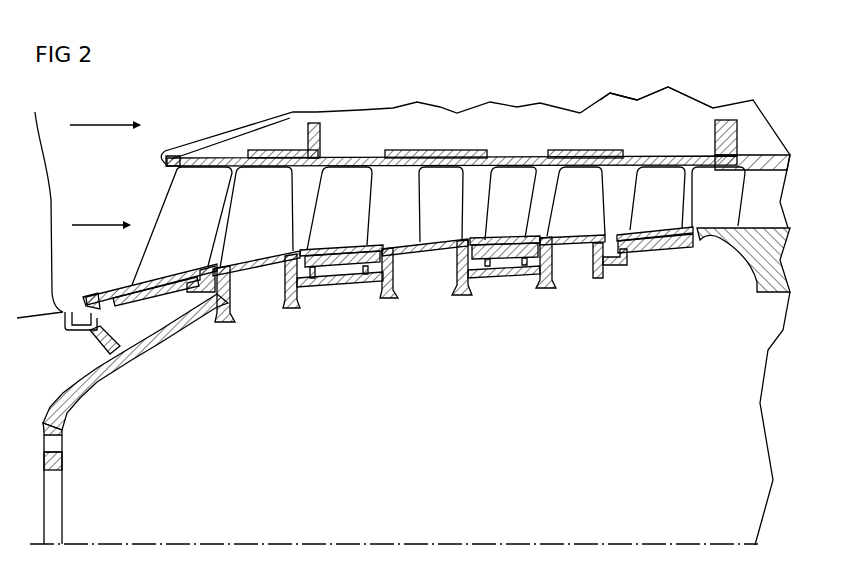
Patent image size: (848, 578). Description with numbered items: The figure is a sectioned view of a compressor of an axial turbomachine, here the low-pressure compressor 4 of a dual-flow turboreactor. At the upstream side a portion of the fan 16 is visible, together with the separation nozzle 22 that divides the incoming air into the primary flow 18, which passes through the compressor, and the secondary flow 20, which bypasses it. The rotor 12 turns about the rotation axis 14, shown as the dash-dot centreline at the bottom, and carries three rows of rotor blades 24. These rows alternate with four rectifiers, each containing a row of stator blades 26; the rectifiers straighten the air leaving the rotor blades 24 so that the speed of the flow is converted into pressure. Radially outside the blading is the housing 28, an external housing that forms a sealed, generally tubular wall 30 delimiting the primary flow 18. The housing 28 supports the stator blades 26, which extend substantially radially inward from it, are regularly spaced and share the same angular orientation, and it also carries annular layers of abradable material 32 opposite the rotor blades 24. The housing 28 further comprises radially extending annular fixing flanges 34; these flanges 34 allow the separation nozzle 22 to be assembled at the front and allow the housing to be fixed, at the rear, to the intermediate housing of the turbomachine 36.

The low pressure compressor 4 is at (687, 98).
The rotor 12 is at (63, 428).
The rotation axis 14 is at (482, 543).
The fan 16 is at (36, 169).
The primary flow 18 is at (101, 213).
The secondary flow 20 is at (105, 113).
The separation nozzle 22 is at (164, 161).
The rotor blades 24 is at (479, 244).
The stator blades 26 is at (388, 238).
The housing 28 is at (551, 107).
The tubular wall 30 is at (514, 156).
The annular layers of abradable material 32 is at (440, 150).
The annular fixing flanges 34 is at (321, 140).
The intermediate housing 36 is at (759, 293).